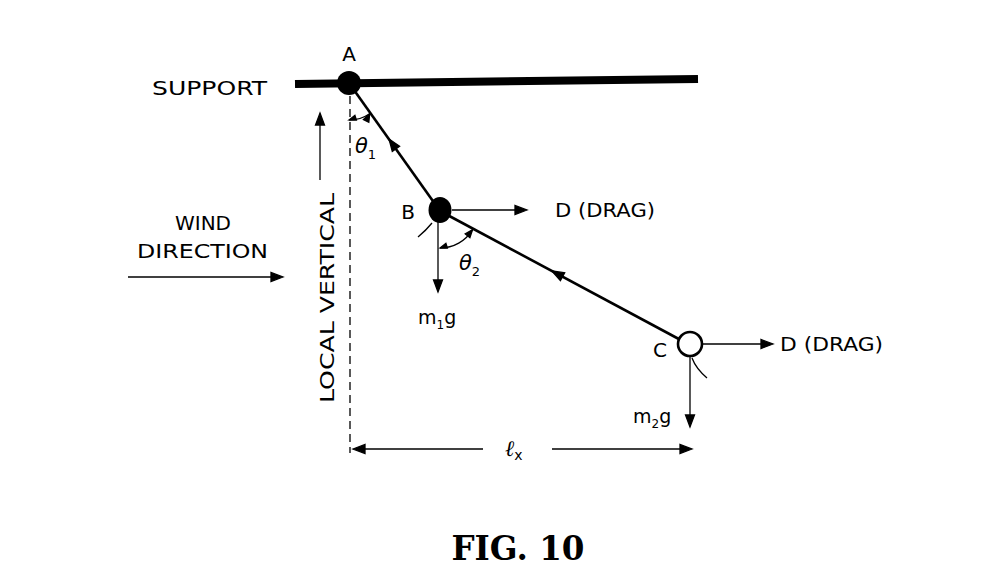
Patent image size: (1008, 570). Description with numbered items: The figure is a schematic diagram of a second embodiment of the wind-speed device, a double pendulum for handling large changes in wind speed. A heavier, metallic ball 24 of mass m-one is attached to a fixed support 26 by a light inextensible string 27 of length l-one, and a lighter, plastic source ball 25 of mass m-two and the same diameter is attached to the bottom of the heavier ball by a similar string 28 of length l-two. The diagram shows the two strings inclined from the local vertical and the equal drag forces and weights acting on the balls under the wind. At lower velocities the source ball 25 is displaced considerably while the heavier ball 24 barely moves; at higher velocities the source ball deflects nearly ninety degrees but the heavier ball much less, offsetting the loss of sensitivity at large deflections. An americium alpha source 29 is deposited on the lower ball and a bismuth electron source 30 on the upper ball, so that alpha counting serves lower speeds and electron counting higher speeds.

The heavier metallic ball 24 is at (447, 191).
The lighter plastic source ball 25 is at (690, 331).
The fixed support 26 is at (567, 75).
The light inextensible string 27 is at (392, 135).
The similar string 28 is at (613, 303).
The alpha source 29 is at (713, 374).
The electron source 30 is at (413, 242).